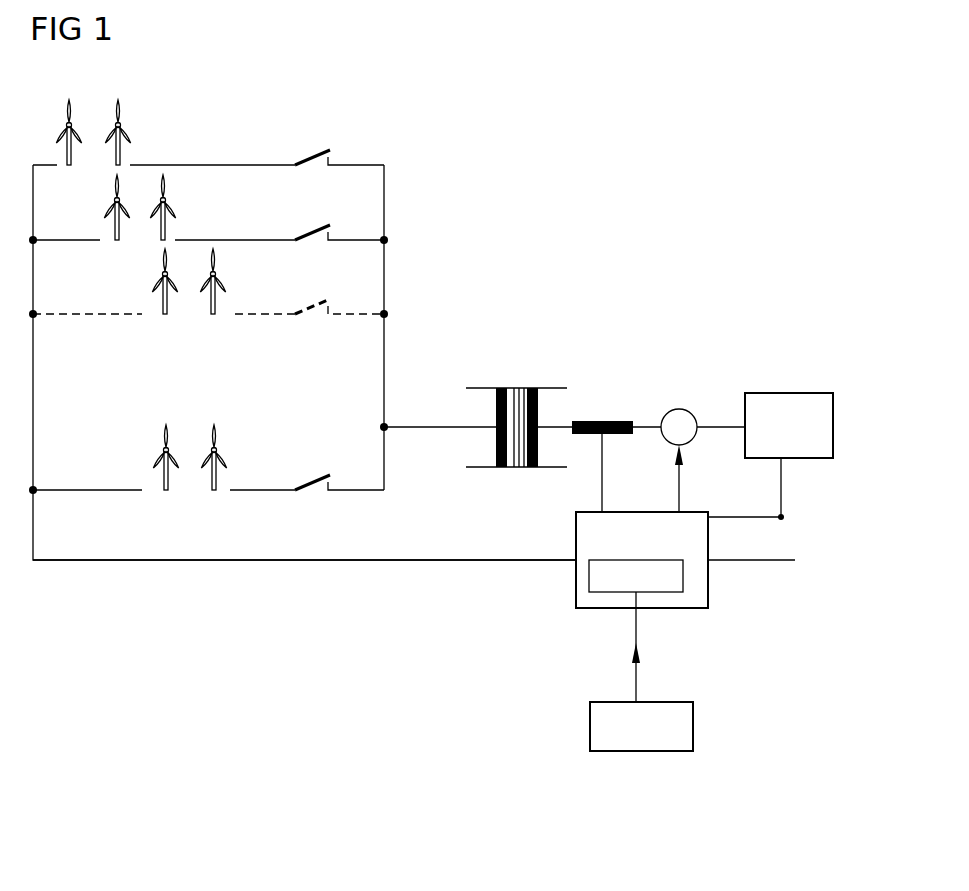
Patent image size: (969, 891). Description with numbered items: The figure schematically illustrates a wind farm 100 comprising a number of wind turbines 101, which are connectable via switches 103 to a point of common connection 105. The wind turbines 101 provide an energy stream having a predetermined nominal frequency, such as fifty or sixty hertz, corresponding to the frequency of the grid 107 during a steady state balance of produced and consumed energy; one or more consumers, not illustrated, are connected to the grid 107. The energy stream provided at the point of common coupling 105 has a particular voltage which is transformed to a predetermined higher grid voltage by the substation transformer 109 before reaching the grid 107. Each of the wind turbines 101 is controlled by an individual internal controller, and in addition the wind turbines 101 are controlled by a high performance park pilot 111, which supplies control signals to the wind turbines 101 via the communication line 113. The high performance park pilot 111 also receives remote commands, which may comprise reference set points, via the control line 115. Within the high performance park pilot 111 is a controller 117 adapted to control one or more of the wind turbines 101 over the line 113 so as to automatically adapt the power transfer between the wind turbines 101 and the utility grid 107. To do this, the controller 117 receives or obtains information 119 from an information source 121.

The wind farm 100 is at (738, 117).
The wind turbines 101 is at (69, 165).
The switches 103 is at (310, 152).
The point of common connection 105 is at (388, 424).
The grid 107 is at (789, 393).
The substation transformer 109 is at (550, 388).
The high performance park pilot 111 is at (708, 590).
The communication line 113 is at (358, 566).
The control line 115 is at (708, 555).
The controller 117 is at (589, 588).
The information 119 is at (641, 625).
The information source 121 is at (590, 728).